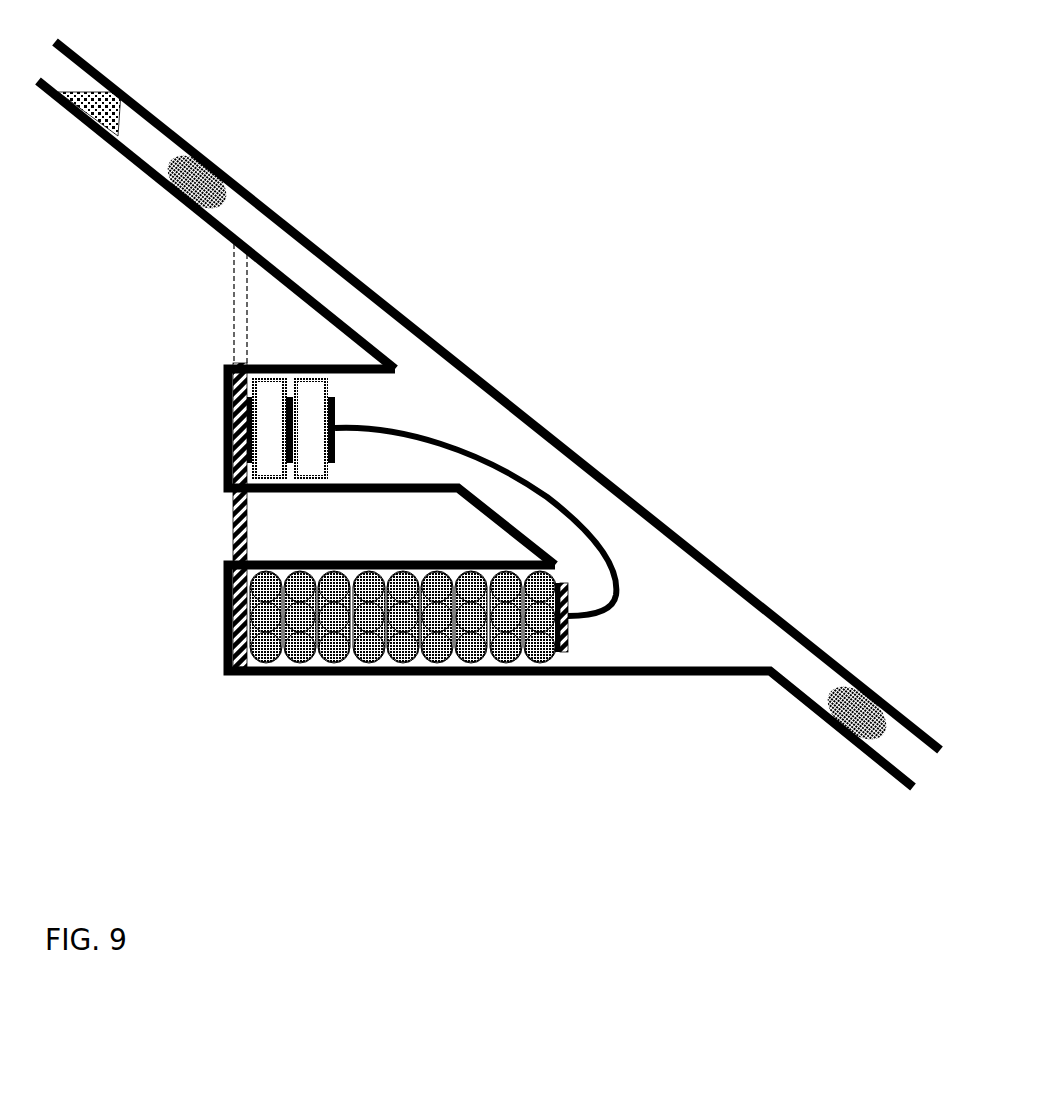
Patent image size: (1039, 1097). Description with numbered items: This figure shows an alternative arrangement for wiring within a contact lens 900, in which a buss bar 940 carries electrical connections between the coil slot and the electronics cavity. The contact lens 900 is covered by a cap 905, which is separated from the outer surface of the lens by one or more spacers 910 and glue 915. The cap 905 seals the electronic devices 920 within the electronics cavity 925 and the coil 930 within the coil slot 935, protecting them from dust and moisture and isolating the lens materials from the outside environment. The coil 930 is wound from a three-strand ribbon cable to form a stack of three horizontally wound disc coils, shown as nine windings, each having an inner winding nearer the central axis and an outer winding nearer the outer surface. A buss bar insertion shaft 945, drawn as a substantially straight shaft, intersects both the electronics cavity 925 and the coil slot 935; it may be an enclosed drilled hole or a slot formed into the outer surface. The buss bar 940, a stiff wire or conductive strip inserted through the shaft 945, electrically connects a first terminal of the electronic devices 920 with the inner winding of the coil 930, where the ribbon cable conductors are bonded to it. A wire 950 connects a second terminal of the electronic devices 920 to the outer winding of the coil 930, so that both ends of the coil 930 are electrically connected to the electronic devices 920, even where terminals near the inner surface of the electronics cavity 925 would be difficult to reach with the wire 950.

The contact lens 900 is at (475, 458).
The cap 905 is at (398, 318).
The spacer 910 is at (138, 103).
The glue 915 is at (244, 189).
The electronic devices 920 is at (310, 470).
The electronics cavity 925 is at (440, 409).
The coil 930 is at (513, 650).
The coil slot 935 is at (645, 608).
The buss bar 940 is at (233, 540).
The buss bar insertion shaft 945 is at (233, 318).
The wire 950 is at (547, 497).